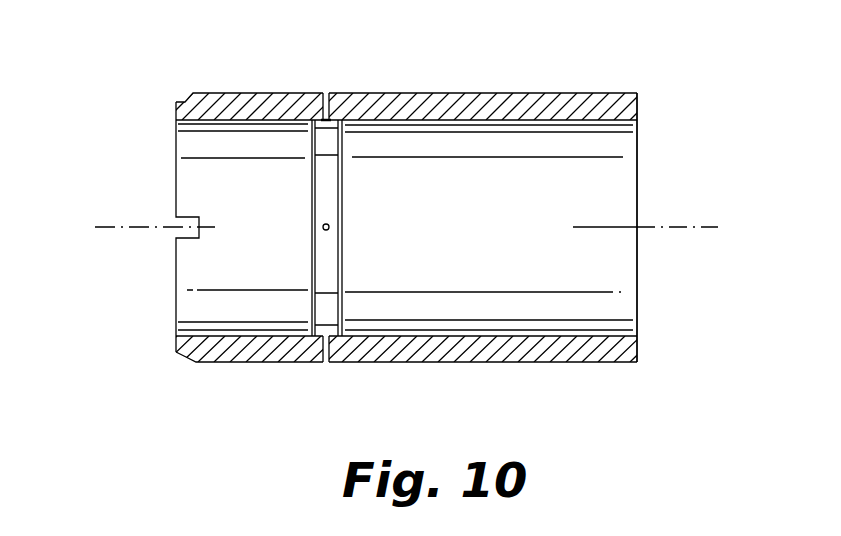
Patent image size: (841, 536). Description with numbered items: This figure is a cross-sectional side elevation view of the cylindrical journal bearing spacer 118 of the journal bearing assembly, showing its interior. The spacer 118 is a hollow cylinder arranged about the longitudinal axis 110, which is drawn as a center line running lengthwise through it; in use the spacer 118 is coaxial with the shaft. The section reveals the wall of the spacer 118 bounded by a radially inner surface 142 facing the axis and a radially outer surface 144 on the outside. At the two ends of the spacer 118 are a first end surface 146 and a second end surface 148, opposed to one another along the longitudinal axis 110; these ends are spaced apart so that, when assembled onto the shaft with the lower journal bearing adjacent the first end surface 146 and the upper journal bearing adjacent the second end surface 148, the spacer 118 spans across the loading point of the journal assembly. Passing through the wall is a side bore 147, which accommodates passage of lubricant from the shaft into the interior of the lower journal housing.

The longitudinal axis 110 is at (105, 226).
The cylindrical journal bearing spacer 118 is at (197, 91).
The radially inner surface 142 is at (587, 302).
The radially outer surface 144 is at (597, 93).
The first end surface 146 is at (176, 297).
The side bore 147 is at (327, 93).
The second end surface 148 is at (637, 183).